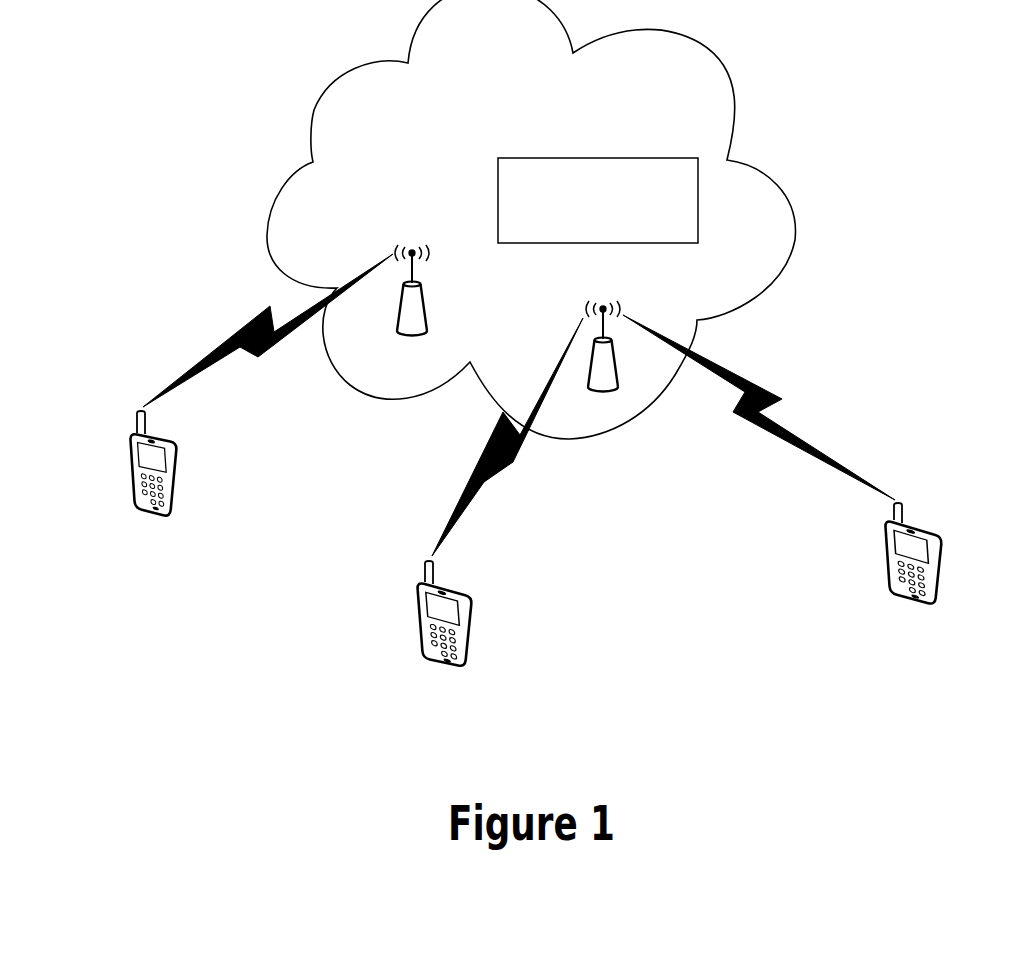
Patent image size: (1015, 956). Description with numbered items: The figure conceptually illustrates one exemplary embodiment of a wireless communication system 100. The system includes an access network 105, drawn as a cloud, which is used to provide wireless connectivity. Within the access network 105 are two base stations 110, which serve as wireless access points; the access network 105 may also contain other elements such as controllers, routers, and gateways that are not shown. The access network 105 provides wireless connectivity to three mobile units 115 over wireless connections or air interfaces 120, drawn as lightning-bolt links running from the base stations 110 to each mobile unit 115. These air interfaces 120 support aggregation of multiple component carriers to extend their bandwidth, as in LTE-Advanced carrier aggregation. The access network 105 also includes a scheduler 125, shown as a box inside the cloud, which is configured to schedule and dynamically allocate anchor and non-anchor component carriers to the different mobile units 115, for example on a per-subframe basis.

The wireless communication system 100 is at (898, 100).
The access network 105 is at (658, 114).
The base station 110 is at (427, 312).
The mobile unit 115 is at (163, 520).
The air interface 120 is at (253, 320).
The scheduler 125 is at (615, 230).